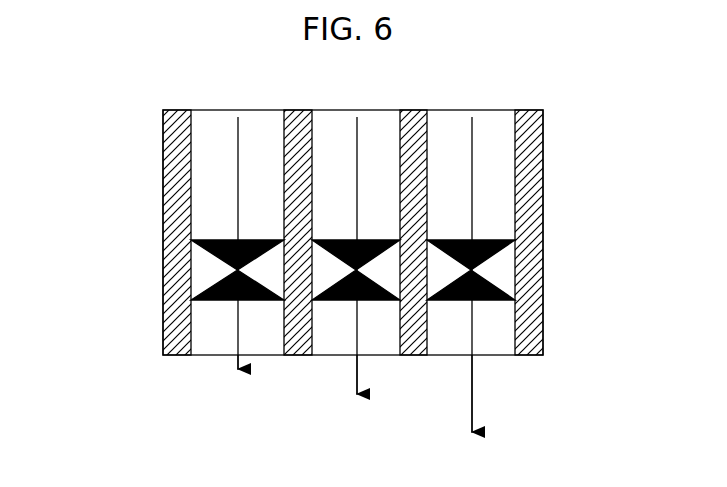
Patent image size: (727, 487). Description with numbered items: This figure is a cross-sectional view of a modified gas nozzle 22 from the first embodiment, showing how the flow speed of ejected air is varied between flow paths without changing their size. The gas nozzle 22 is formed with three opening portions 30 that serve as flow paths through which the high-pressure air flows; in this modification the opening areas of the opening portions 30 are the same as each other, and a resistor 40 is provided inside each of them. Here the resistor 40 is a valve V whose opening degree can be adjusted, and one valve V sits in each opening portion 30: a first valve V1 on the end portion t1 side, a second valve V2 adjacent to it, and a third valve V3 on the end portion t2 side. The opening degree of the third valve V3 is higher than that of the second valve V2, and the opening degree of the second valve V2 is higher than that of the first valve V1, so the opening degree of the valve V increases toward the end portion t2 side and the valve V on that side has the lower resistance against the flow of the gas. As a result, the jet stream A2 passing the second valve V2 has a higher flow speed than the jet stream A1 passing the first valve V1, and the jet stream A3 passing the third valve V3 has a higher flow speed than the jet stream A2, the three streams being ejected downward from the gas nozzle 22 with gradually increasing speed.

The gas nozzle 22 is at (543, 147).
The opening portion 30 is at (258, 130).
The resistor 40 is at (352, 359).
The valve V is at (352, 359).
The first valve V1 is at (207, 277).
The second valve V2 is at (325, 300).
The third valve V3 is at (488, 285).
The jet stream A1 is at (220, 381).
The jet stream A2 is at (373, 396).
The jet stream A3 is at (490, 410).